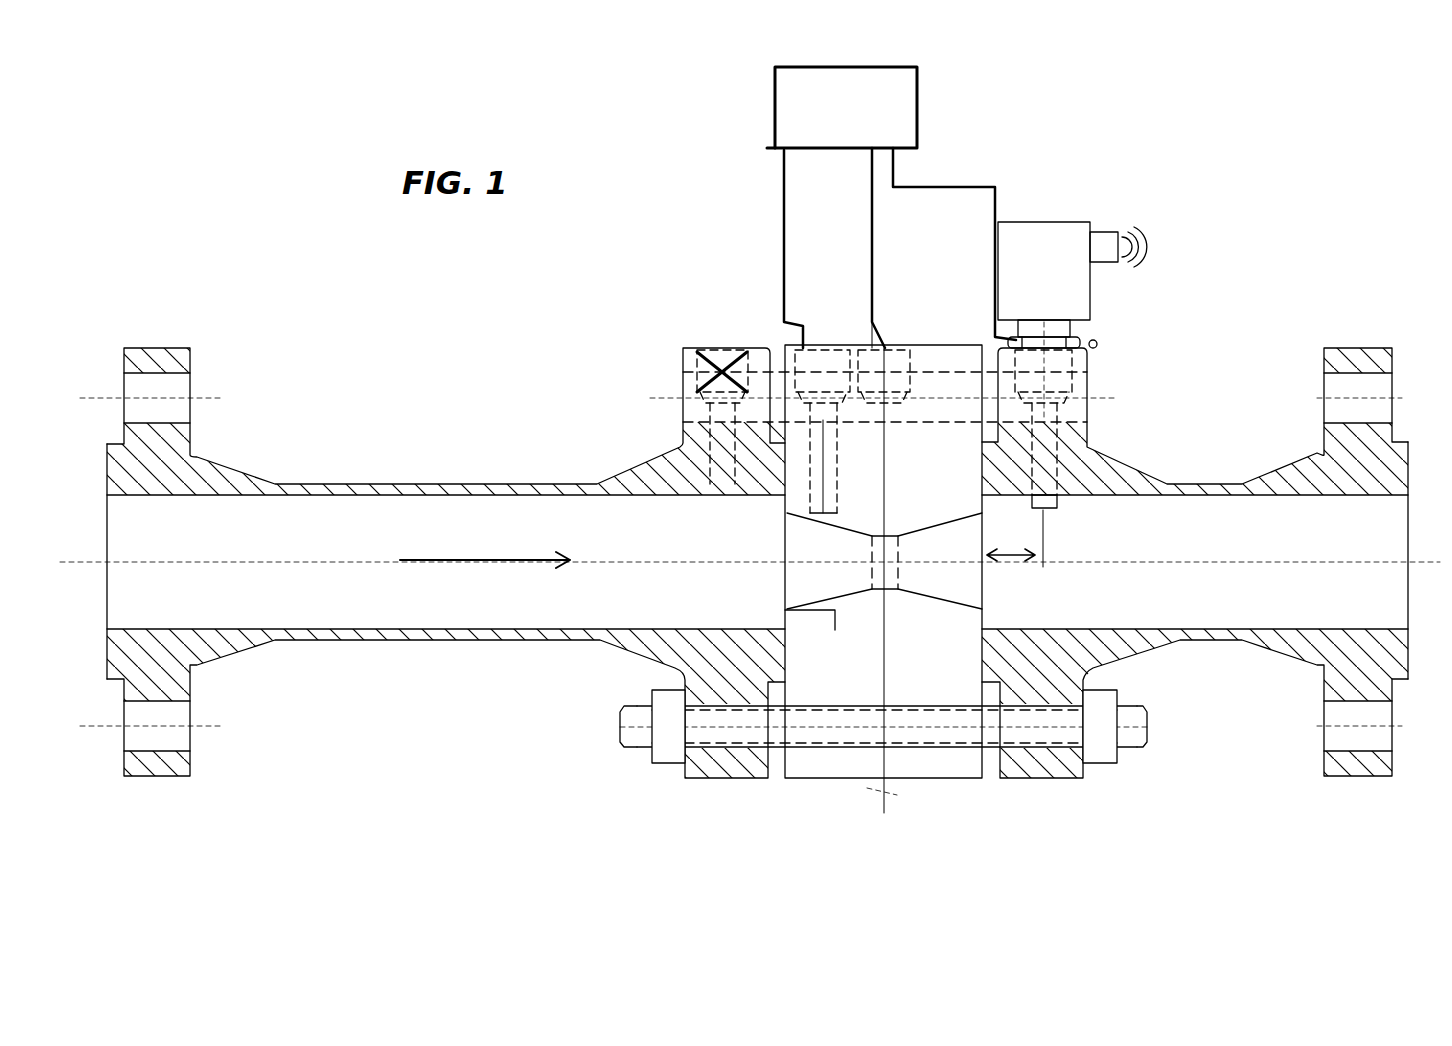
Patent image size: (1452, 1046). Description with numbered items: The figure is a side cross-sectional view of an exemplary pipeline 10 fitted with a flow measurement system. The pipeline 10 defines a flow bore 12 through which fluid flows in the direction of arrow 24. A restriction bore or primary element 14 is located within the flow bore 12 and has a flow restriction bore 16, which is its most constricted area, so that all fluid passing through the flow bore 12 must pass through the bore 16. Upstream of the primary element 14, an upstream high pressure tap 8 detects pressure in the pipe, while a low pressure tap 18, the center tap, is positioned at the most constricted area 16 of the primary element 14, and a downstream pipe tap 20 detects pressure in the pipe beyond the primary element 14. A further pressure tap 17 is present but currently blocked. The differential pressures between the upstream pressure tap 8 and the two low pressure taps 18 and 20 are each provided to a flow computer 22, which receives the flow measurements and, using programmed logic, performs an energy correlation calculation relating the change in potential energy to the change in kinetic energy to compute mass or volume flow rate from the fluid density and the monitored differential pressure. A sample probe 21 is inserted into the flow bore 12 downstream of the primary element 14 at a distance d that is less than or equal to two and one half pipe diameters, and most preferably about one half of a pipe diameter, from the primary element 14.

The upstream high pressure tap 8 is at (822, 348).
The pipeline 10 is at (492, 453).
The flow bore 12 is at (447, 623).
The primary element 14 is at (922, 776).
The flow restriction bore 16 is at (887, 587).
The pressure tap 17 is at (722, 334).
The low pressure tap 18 is at (886, 348).
The downstream pipe tap 20 is at (1072, 370).
The sample probe 21 is at (1043, 232).
The flow computer 22 is at (872, 130).
The arrow 24 is at (437, 558).
The distance d is at (1022, 545).